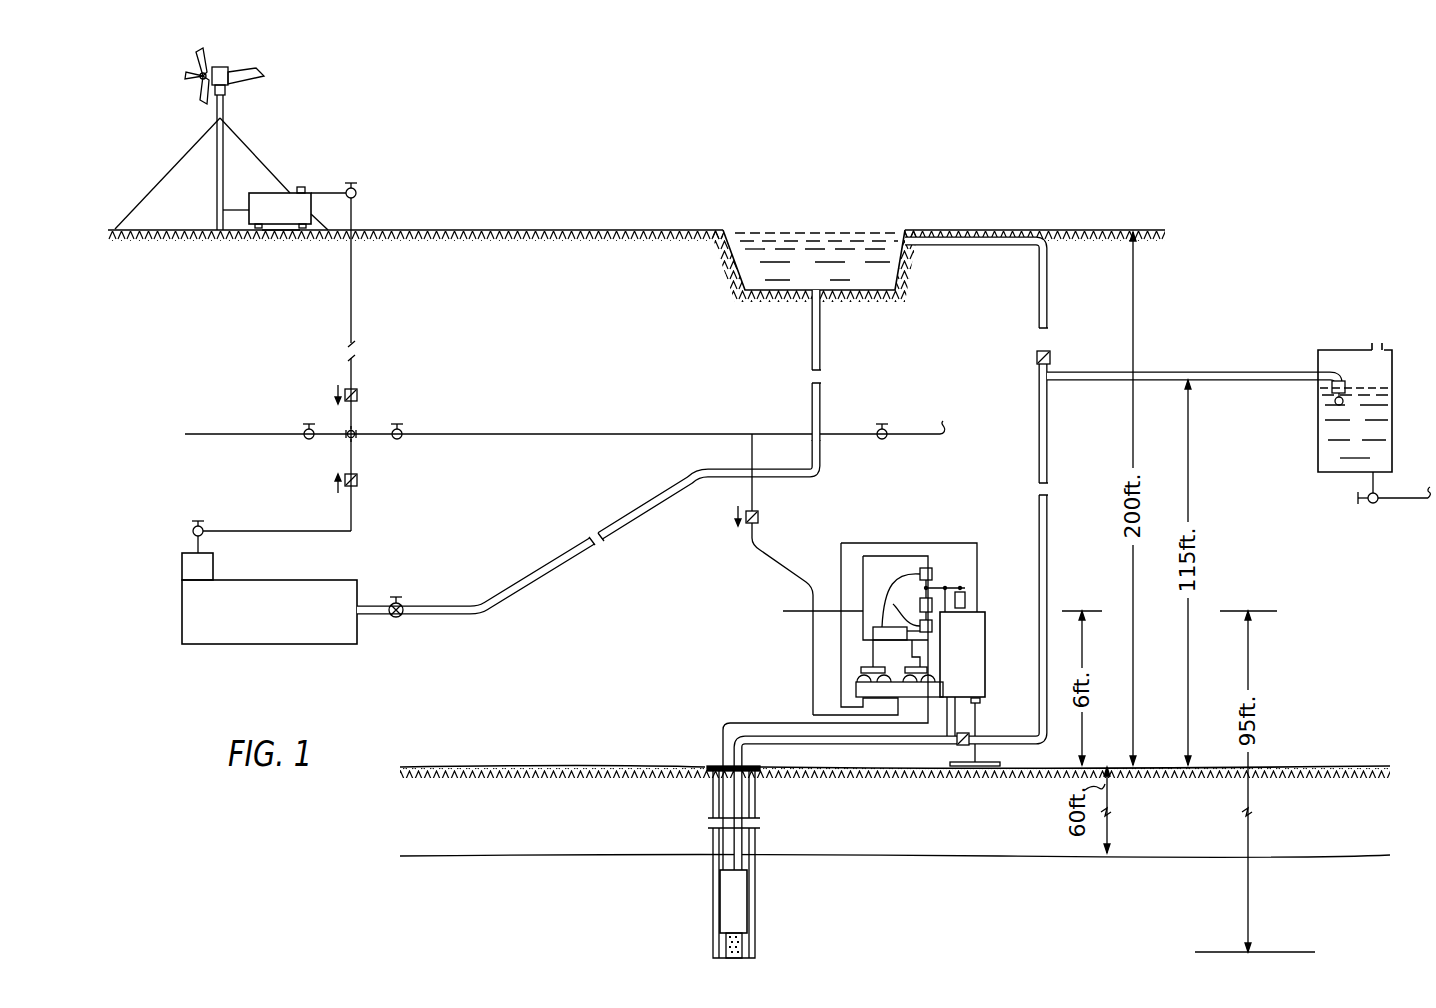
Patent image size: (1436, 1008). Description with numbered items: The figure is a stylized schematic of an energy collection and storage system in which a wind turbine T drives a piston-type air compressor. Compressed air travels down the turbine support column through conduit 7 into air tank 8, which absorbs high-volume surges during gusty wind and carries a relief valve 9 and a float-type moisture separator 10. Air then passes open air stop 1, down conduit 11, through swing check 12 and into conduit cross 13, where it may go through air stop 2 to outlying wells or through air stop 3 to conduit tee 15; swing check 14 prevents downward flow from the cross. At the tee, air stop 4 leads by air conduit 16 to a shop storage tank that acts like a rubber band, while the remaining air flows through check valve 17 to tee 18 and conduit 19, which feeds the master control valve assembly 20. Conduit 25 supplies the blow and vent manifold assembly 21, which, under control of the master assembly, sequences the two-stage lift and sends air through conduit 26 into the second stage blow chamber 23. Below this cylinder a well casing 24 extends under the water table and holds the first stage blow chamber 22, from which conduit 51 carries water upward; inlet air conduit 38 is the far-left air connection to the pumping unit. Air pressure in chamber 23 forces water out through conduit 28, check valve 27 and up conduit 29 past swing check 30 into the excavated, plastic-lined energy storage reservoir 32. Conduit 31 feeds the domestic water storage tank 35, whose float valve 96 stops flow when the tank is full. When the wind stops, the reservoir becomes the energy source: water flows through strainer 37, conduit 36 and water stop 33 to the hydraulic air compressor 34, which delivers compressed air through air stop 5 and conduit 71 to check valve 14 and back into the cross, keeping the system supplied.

The wind turbine T is at (272, 98).
The air stop 1 is at (357, 193).
The air stop 2 is at (304, 441).
The air stop 3 is at (401, 441).
The air stop 4 is at (887, 430).
The air stop 5 is at (192, 531).
The conduit 7 is at (241, 208).
The air tank 8 is at (273, 223).
The relief valve 9 is at (302, 186).
The moisture separator 10 is at (276, 232).
The conduit 11 is at (352, 292).
The swing check 12 is at (358, 394).
The conduit cross 13 is at (355, 440).
The swing check 14 is at (357, 482).
The conduit tee 15 is at (752, 432).
The air conduit 16 is at (938, 428).
The check valve 17 is at (759, 517).
The tee 18 is at (811, 610).
The conduit 19 is at (828, 609).
The master control valve assembly 20 is at (906, 618).
The blow and vent manifold assembly 21 is at (930, 686).
The first stage blow chamber 22 is at (740, 901).
The second stage blow chamber 23 is at (986, 650).
The well casing 24 is at (730, 833).
The conduit 25 is at (812, 645).
The conduit 26 is at (980, 580).
The check valve 27 is at (972, 768).
The conduit 28 is at (945, 735).
The conduit 29 is at (1050, 578).
The swing check 30 is at (1035, 357).
The conduit 31 is at (1148, 374).
The energy storage reservoir 32 is at (818, 236).
The water stop 33 is at (398, 618).
The hydraulic air compressor 34 is at (257, 622).
The domestic water storage tank 35 is at (1395, 408).
The conduit 36 is at (626, 519).
The strainer 37 is at (825, 300).
The inlet air conduit 38 is at (770, 562).
The conduit 51 is at (796, 736).
The conduit 71 is at (285, 533).
The float valve 96 is at (1333, 397).